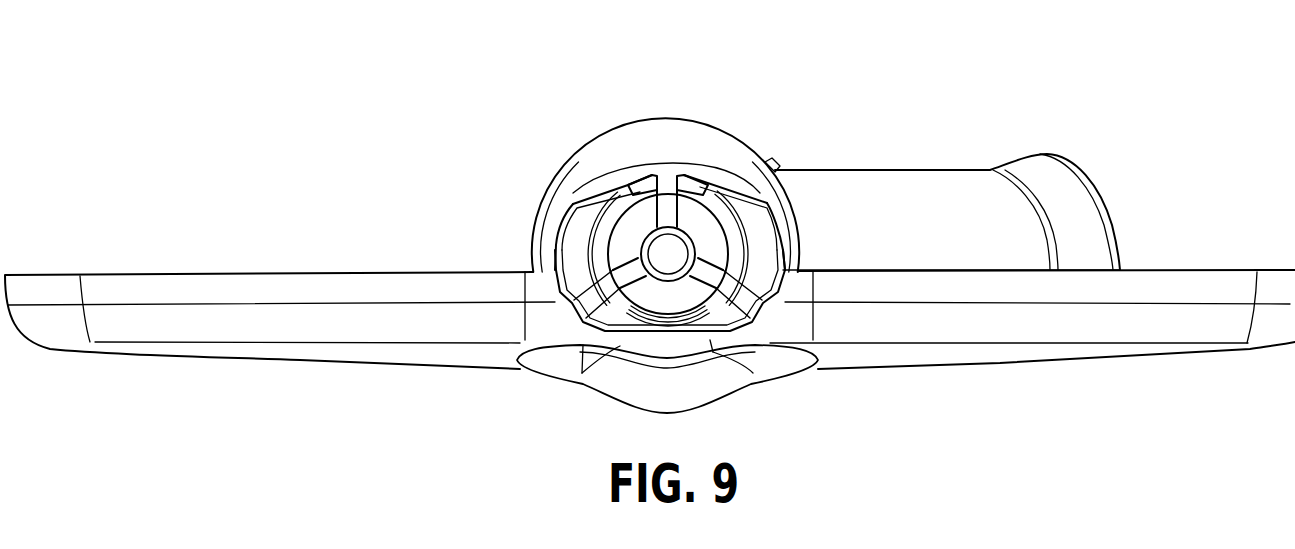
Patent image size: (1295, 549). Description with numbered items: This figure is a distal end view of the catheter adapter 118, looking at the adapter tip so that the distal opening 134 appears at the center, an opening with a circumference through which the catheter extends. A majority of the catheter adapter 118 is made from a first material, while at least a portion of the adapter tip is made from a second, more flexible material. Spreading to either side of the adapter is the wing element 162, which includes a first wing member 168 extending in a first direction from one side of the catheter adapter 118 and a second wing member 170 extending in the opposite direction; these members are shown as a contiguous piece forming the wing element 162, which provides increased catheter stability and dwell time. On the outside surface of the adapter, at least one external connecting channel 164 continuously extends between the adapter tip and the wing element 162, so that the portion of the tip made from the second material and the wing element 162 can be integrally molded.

The catheter adapter 118 is at (757, 54).
The distal opening 134 is at (668, 258).
The wing element 162 is at (426, 193).
The external connecting channel 164 is at (672, 192).
The first wing member 168 is at (205, 270).
The second wing member 170 is at (1197, 270).